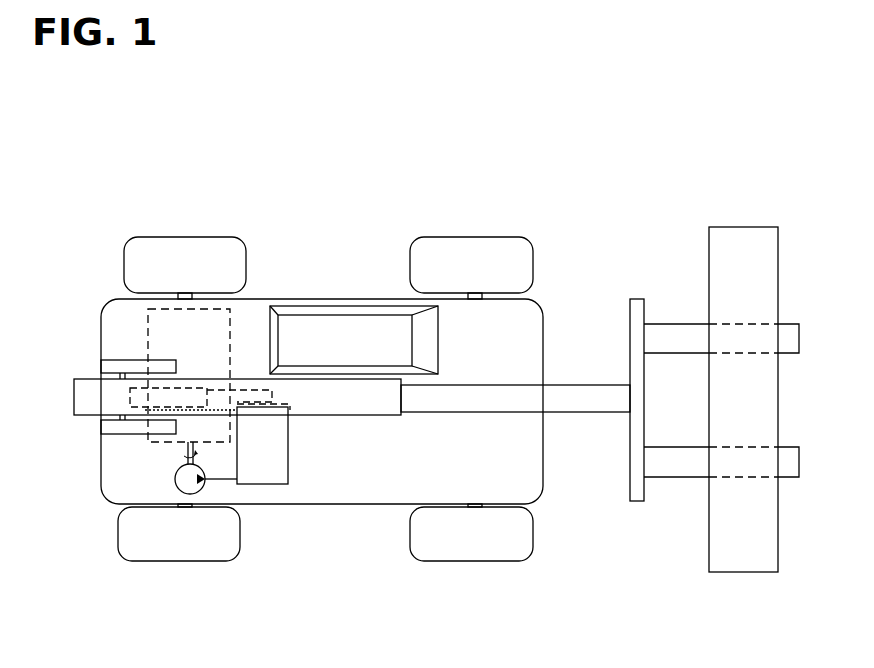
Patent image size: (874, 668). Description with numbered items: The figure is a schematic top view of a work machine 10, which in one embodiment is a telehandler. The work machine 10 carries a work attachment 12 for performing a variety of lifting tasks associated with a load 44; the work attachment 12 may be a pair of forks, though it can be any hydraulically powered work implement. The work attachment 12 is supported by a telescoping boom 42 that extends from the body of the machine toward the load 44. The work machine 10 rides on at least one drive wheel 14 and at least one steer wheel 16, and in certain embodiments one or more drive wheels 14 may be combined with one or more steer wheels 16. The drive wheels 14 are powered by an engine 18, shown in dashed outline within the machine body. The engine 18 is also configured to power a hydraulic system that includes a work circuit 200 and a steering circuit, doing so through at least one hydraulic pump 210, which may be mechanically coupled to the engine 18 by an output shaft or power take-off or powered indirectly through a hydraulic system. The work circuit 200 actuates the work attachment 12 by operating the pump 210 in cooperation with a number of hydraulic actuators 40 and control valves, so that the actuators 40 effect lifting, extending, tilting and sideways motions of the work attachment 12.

The work machine 10 is at (98, 160).
The work attachment 12 is at (630, 299).
The drive wheel 14 is at (136, 237).
The steer wheel 16 is at (418, 238).
The engine 18 is at (148, 328).
The hydraulic actuators 40 is at (128, 392).
The telescoping boom 42 is at (555, 412).
The load 44 is at (733, 572).
The work circuit 200 is at (263, 490).
The hydraulic pump 210 is at (175, 482).